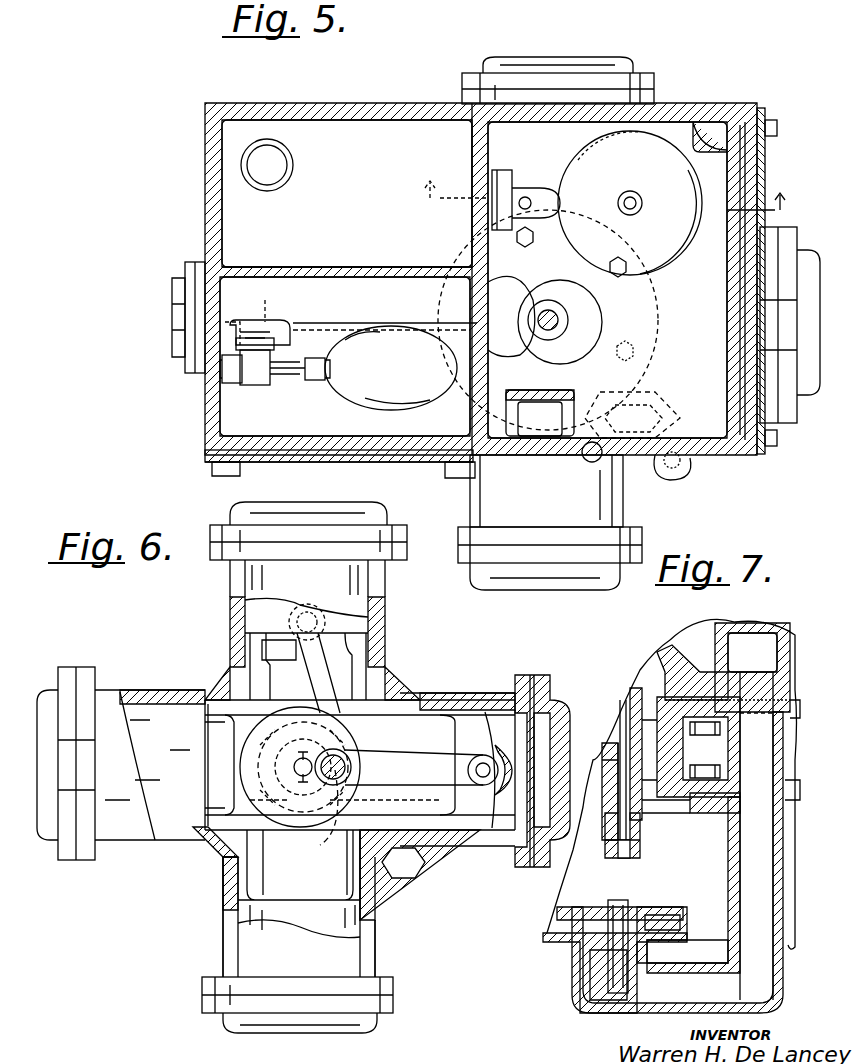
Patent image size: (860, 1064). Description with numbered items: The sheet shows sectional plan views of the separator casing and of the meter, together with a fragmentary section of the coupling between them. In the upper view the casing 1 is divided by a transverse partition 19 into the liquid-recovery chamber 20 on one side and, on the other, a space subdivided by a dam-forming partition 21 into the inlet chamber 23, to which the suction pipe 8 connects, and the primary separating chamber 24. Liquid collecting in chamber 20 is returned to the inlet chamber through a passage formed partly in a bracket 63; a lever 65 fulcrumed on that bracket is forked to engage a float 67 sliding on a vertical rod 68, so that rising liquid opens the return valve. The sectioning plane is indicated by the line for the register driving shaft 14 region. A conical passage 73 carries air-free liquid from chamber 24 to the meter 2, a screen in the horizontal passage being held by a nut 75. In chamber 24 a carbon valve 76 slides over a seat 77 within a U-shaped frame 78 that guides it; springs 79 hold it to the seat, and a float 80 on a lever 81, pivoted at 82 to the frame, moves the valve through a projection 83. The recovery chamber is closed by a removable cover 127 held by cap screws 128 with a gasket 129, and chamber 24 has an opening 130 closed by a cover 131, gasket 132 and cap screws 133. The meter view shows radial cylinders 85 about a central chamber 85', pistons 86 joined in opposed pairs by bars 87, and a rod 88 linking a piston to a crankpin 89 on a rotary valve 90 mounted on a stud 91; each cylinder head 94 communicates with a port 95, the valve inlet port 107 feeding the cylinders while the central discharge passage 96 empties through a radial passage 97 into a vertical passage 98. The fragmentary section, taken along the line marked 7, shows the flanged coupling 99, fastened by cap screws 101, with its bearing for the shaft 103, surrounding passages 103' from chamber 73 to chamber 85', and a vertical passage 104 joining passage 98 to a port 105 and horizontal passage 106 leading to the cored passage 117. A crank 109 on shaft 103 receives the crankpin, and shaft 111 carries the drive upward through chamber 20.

In FIG. 5, the casing 1 is at (210, 104).
In FIG. 6, the meter 2 is at (208, 626).
In FIG. 6, the section line 7 is at (256, 720).
In FIG. 5, the suction pipe 8 is at (294, 168).
In FIG. 5, the register driving shaft 14 is at (603, 206).
In FIG. 5, the transverse partition 19 is at (472, 140).
In FIG. 5, the chamber 20 is at (682, 128).
In FIG. 7, the chamber 20 is at (695, 628).
In FIG. 5, the partition 21 is at (360, 270).
In FIG. 5, the inlet chamber 23 is at (347, 193).
In FIG. 5, the primary separating chamber 24 is at (345, 356).
In FIG. 5, the bracket 63 is at (503, 174).
In FIG. 5, the lever 65 is at (555, 210).
In FIG. 5, the float 67 is at (630, 203).
In FIG. 5, the vertical rod 68 is at (640, 210).
In FIG. 7, the conical passage 73 is at (655, 672).
In FIG. 5, the nut 75 is at (176, 345).
In FIG. 5, the valve 76 is at (385, 313).
In FIG. 5, the seat 77 is at (275, 318).
In FIG. 5, the U-shaped metal frame 78 is at (282, 382).
In FIG. 5, the springs 79 is at (265, 385).
In FIG. 5, the float 80 is at (388, 340).
In FIG. 5, the lever 81 is at (315, 380).
In FIG. 5, the pivot 82 is at (228, 392).
In FIG. 5, the projection 83 is at (246, 316).
In FIG. 5, the radial cylinders 85 is at (533, 307).
In FIG. 6, the radial cylinders 85 is at (305, 779).
In FIG. 7, the radial cylinders 85 is at (681, 865).
In FIG. 6, the central chamber 85' is at (204, 868).
In FIG. 7, the central chamber 85' is at (682, 861).
In FIG. 6, the pistons 86 is at (265, 613).
In FIG. 6, the bars 87 is at (262, 696).
In FIG. 6, the rod 88 is at (320, 656).
In FIG. 6, the crankpin 89 is at (348, 760).
In FIG. 6, the valve 90 is at (286, 715).
In FIG. 7, the valve 90 is at (658, 910).
In FIG. 6, the stud 91 is at (294, 774).
In FIG. 7, the stud 91 is at (618, 902).
In FIG. 5, the cylinder head 94 is at (598, 60).
In FIG. 6, the cylinder head 94 is at (222, 532).
In FIG. 6, the port 95 is at (350, 703).
In FIG. 7, the discharge passage 96 is at (592, 978).
In FIG. 7, the radial passage 97 is at (687, 970).
In FIG. 7, the vertical passage 98 is at (748, 908).
In FIG. 7, the flanged coupling 99 is at (698, 747).
In FIG. 5, the cap screws 101 is at (660, 352).
In FIG. 7, the shaft 103 is at (691, 820).
In FIG. 7, the passages 103' is at (616, 773).
In FIG. 5, the vertical passage 104 is at (660, 392).
In FIG. 7, the vertical passage 104 is at (757, 836).
In FIG. 7, the port 105 is at (760, 680).
In FIG. 5, the horizontal passage 106 is at (590, 440).
In FIG. 7, the horizontal passage 106 is at (740, 642).
In FIG. 6, the inlet port 107 is at (412, 797).
In FIG. 7, the crank 109 is at (612, 860).
In FIG. 5, the shaft 111 is at (562, 315).
In FIG. 5, the cored passage 117 is at (535, 418).
In FIG. 5, the cover 127 is at (762, 120).
In FIG. 5, the cap screws 128 is at (778, 128).
In FIG. 5, the gasket 129 is at (758, 184).
In FIG. 5, the opening 130 is at (265, 455).
In FIG. 5, the cover 131 is at (355, 462).
In FIG. 5, the gasket 132 is at (402, 460).
In FIG. 5, the cap screws 133 is at (452, 470).